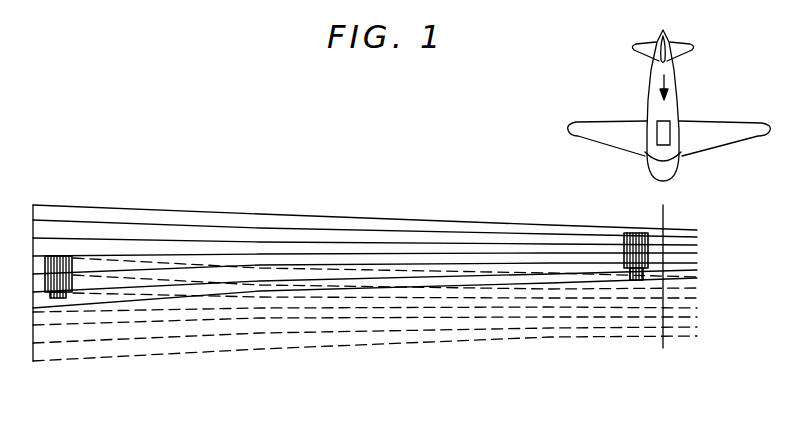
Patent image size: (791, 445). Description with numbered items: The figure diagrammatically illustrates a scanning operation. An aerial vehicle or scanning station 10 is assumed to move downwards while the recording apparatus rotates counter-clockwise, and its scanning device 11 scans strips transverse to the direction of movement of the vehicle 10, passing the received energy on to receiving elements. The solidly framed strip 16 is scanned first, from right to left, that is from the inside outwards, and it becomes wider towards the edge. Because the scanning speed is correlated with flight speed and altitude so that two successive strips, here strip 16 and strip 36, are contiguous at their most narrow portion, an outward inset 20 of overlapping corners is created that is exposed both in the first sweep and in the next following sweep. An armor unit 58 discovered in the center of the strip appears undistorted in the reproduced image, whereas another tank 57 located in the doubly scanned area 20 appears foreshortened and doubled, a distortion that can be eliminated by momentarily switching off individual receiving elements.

The aerial vehicle 10 is at (677, 82).
The scanning device 11 is at (670, 143).
The solidly framed strip 16 is at (278, 238).
The outward inset of overlapping corners 20 is at (155, 278).
The strip 36 is at (232, 338).
The tank 57 is at (47, 256).
The armor unit 58 is at (632, 233).